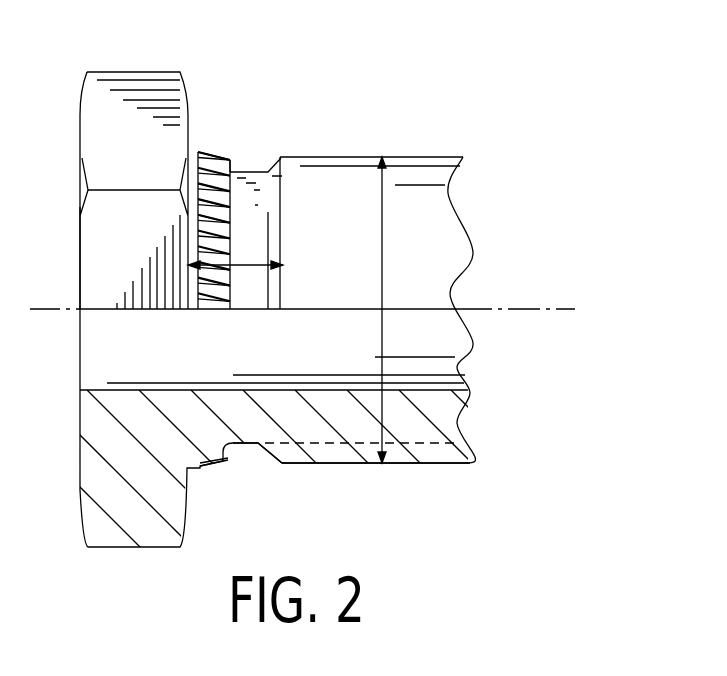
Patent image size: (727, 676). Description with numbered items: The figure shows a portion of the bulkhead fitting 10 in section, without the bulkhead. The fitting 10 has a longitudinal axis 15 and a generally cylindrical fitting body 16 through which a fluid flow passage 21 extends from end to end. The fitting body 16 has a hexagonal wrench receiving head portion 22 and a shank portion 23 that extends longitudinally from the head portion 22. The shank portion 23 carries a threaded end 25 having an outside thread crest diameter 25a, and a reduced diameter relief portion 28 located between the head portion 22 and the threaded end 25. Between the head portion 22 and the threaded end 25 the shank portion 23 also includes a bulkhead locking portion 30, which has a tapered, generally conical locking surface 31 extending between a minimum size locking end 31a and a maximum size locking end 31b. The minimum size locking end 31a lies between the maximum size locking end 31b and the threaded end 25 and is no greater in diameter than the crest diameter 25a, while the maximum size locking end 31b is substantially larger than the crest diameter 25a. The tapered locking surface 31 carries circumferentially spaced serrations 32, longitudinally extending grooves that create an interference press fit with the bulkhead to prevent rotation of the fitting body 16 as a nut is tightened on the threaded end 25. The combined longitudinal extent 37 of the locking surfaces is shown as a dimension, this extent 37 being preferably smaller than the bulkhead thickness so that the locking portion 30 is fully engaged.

The bulkhead fitting 10 is at (603, 129).
The longitudinal axis 15 is at (515, 309).
The fitting body 16 is at (356, 424).
The fluid flow passage 21 is at (167, 389).
The head portion 22 is at (125, 80).
The shank portion 23 is at (420, 157).
The threaded end 25 is at (445, 460).
The thread crest diameter 25a is at (382, 200).
The reduced diameter relief portion 28 is at (258, 445).
The bulkhead locking portion 30 is at (214, 92).
The tapered locking surface 31 is at (221, 462).
The minimum size locking end 31a is at (228, 157).
The maximum size locking end 31b is at (205, 148).
The serrations 32 is at (200, 196).
The combined longitudinal extent 37 is at (250, 265).